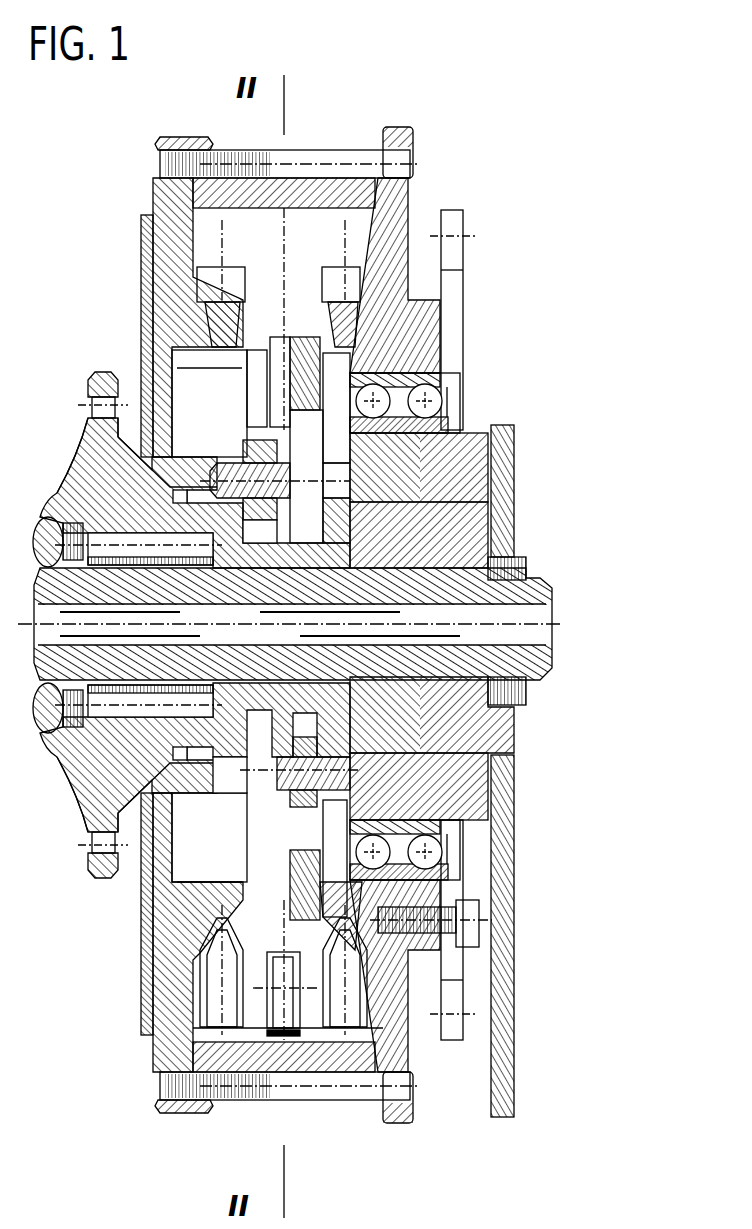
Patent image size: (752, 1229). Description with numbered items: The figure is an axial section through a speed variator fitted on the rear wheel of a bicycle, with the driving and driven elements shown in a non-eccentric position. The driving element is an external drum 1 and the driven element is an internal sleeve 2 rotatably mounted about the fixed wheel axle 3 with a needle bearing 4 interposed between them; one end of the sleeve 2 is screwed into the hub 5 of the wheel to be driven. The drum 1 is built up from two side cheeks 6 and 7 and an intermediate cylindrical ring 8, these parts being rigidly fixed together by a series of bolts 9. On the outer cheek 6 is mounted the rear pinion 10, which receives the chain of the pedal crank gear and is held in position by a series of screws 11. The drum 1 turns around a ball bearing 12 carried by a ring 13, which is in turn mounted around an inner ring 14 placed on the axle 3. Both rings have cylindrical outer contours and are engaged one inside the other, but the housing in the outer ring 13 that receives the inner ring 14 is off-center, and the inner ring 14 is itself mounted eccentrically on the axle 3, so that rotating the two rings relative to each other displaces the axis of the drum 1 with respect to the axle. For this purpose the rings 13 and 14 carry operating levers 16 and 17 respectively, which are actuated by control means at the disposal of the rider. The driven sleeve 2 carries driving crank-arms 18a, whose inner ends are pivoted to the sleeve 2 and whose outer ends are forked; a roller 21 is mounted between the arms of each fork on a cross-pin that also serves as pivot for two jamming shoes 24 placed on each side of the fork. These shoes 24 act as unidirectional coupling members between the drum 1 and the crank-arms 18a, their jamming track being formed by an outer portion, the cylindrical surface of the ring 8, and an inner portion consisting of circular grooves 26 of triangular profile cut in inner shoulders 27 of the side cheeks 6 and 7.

The external drum 1 is at (108, 163).
The internal sleeve 2 is at (143, 732).
The axle 3 is at (539, 577).
The needle bearing 4 is at (73, 488).
The hub 5 is at (90, 437).
The outer side cheek 6 is at (394, 223).
The side cheek 7 is at (170, 192).
The intermediate cylindrical ring 8 is at (320, 180).
The bolts 9 is at (386, 161).
The rear pinion 10 is at (513, 962).
The screws 11 is at (511, 887).
The ball bearing 12 is at (446, 400).
The ring 13 is at (469, 438).
The inner ring 14 is at (513, 528).
The operating lever 16 is at (509, 464).
The operating lever 17 is at (509, 1043).
The driving crank-arm 18a is at (275, 868).
The roller 21 is at (305, 1033).
The jamming shoe 24 is at (213, 1018).
The circular groove 26 is at (215, 294).
The inner shoulder 27 is at (327, 330).